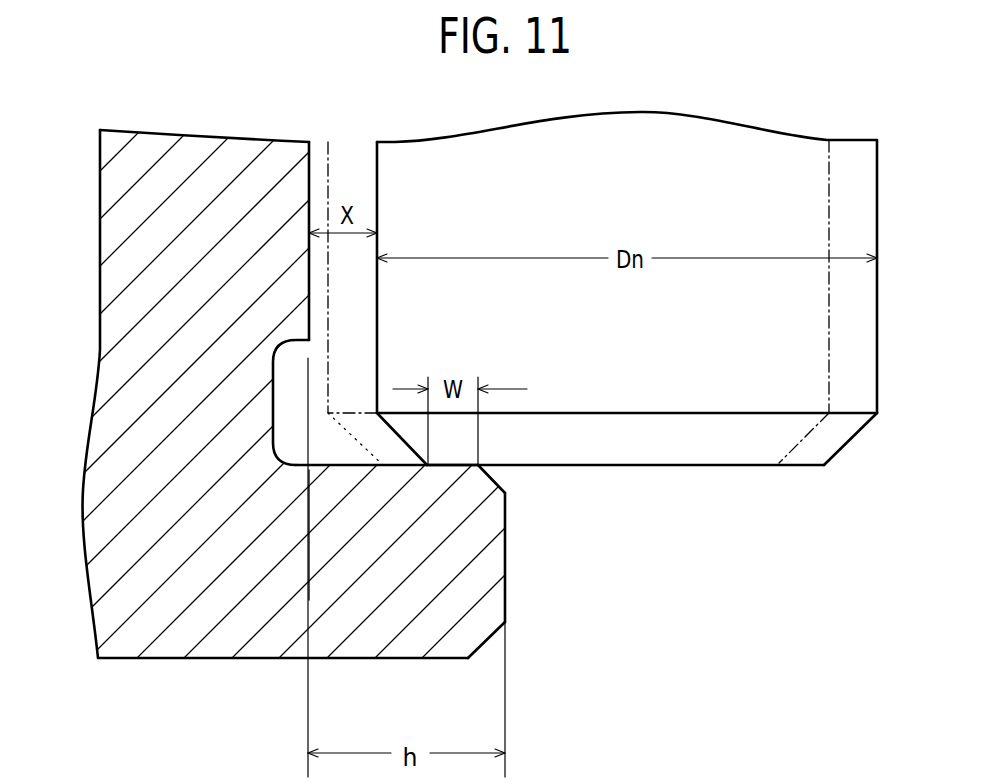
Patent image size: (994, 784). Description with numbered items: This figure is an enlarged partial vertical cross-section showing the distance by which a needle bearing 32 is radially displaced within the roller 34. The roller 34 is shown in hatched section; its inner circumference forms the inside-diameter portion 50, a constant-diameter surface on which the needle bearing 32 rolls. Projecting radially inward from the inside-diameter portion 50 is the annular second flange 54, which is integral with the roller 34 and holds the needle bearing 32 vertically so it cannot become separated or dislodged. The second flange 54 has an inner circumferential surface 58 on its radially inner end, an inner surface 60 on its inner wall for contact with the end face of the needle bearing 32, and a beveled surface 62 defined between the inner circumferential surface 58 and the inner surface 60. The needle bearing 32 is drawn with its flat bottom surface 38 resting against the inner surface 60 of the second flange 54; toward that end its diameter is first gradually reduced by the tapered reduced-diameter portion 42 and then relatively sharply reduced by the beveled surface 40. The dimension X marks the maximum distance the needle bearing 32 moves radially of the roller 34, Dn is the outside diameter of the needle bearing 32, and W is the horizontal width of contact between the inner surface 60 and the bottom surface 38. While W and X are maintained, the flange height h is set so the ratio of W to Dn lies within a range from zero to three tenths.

The needle bearing 32 is at (810, 337).
The roller 34 is at (225, 592).
The bottom surface 38 is at (722, 467).
The beveled surface 40 is at (393, 443).
The tapered reduced-diameter portion 42 is at (878, 380).
The inside-diameter portion 50 is at (309, 307).
The second flange 54 is at (428, 573).
The inner circumferential surface 58 is at (507, 557).
The inner surface 60 is at (338, 464).
The beveled surface 62 is at (496, 476).